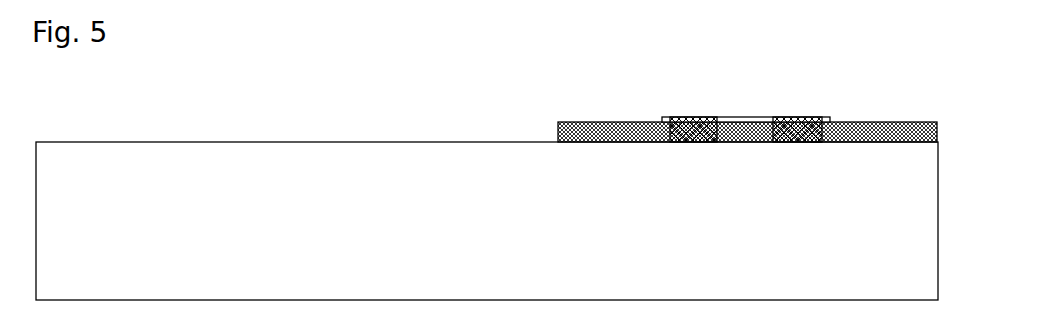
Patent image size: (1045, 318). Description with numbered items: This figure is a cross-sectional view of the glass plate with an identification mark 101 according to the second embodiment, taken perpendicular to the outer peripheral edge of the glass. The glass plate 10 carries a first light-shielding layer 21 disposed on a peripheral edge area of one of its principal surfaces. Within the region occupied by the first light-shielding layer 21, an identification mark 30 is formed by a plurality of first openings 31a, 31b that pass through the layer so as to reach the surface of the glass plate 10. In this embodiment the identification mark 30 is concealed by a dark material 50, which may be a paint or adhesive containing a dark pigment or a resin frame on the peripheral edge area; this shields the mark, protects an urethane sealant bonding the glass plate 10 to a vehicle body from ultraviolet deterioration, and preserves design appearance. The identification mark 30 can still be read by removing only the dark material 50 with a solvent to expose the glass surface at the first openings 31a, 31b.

The glass plate with an identification mark 101 is at (898, 67).
The glass plate 10 is at (457, 165).
The first light-shielding layer 21 is at (884, 137).
The identification mark 30 is at (746, 108).
The first opening 31a is at (693, 121).
The first opening 31b is at (797, 121).
The dark material 50 is at (810, 142).